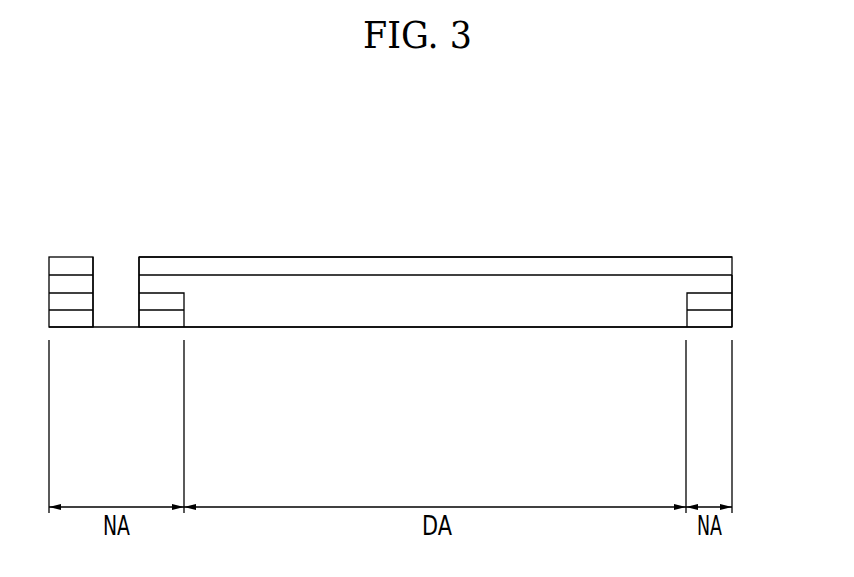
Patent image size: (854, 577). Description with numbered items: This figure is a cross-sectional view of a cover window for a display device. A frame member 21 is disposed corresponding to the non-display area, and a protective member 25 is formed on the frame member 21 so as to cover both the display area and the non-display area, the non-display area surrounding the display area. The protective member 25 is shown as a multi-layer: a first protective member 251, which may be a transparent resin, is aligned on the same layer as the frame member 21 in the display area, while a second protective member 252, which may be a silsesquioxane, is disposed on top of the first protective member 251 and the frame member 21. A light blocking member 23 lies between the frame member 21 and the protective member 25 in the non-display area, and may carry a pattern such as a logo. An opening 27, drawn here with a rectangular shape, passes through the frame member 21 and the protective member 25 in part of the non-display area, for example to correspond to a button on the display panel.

The frame member 21 is at (170, 318).
The light blocking member 23 is at (155, 300).
The protective member 25 is at (598, 188).
The first protective member 251 is at (578, 300).
The second protective member 252 is at (510, 265).
The opening 27 is at (96, 318).